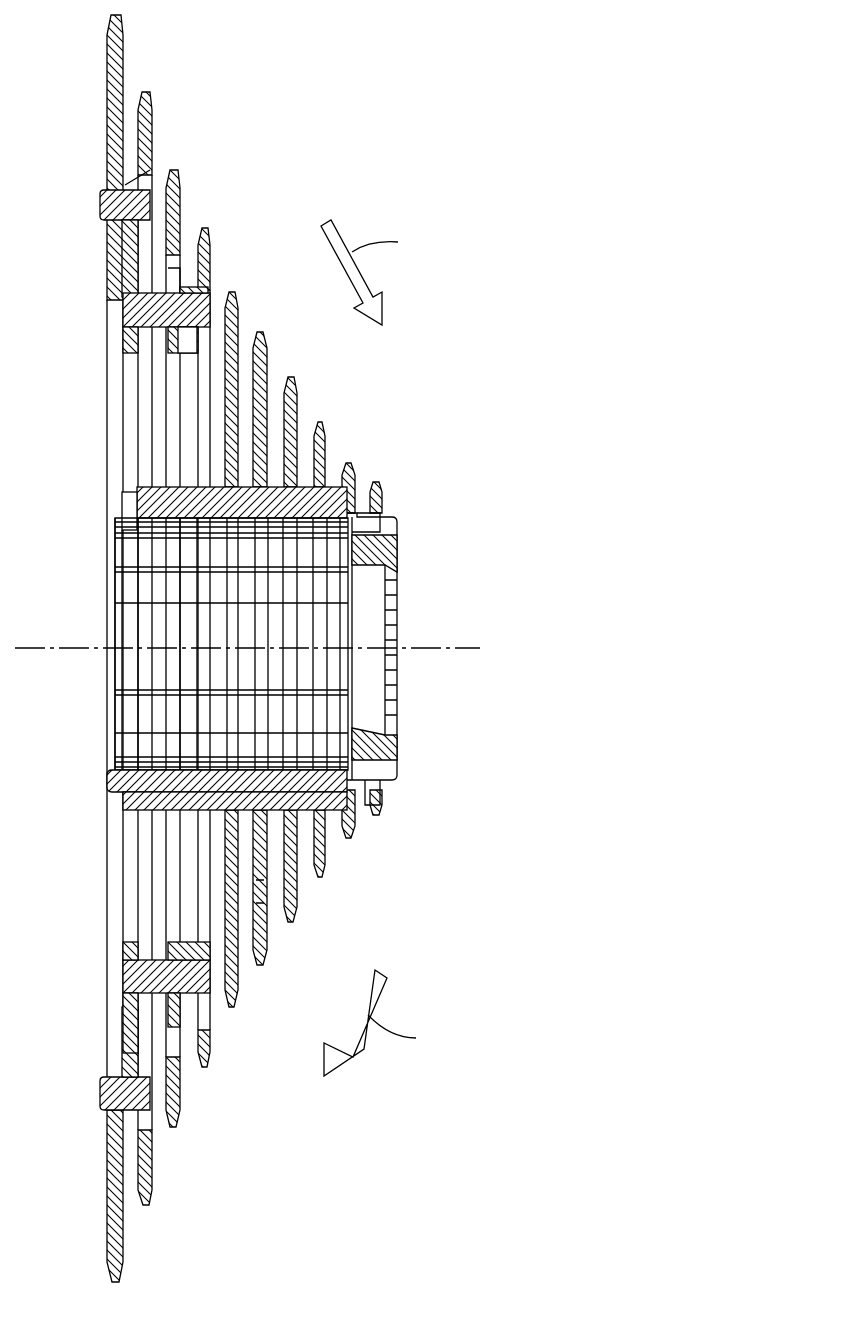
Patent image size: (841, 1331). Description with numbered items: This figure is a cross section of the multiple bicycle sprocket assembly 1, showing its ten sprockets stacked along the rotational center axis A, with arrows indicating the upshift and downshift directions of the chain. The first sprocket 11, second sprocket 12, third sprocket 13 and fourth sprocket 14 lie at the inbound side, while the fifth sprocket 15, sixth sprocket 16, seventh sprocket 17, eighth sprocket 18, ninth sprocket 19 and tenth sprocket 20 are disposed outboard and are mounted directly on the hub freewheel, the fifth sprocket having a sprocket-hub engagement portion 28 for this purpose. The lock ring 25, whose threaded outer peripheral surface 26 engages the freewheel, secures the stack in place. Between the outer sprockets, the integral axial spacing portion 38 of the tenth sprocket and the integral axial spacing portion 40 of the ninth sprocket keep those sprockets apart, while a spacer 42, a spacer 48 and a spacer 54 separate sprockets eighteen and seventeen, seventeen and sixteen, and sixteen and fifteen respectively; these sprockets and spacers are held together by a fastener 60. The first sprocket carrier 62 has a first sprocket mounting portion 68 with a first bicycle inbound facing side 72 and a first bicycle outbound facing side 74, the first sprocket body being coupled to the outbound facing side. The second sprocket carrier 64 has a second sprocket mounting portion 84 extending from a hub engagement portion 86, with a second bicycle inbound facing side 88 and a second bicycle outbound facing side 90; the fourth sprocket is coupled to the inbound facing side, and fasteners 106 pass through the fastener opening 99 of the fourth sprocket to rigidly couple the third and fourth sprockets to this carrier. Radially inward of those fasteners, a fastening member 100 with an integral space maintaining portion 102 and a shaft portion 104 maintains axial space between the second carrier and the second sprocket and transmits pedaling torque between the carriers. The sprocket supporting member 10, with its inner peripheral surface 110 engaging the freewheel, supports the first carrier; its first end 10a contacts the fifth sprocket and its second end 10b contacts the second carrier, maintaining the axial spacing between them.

The multiple bicycle sprocket assembly 1 is at (418, 384).
The sprocket supporting member 10 is at (150, 490).
The first end 10a is at (246, 472).
The second end 10b is at (128, 512).
The first sprocket 11 is at (215, 233).
The second sprocket 12 is at (184, 190).
The third sprocket 13 is at (155, 108).
The fourth sprocket 14 is at (102, 57).
The fifth sprocket 15 is at (242, 300).
The sixth sprocket 16 is at (270, 355).
The seventh sprocket 17 is at (300, 395).
The eighth sprocket 18 is at (328, 432).
The ninth sprocket 19 is at (360, 473).
The tenth sprocket 20 is at (386, 489).
The lock ring 25 is at (398, 555).
The outer peripheral surface 26 is at (386, 783).
The sprocket-hub engagement portion 28 is at (230, 762).
The integral axial spacing portion 38 is at (365, 800).
The integral axial spacing portion 40 is at (338, 815).
The spacer 42 is at (313, 838).
The spacer 48 is at (284, 905).
The spacer 54 is at (258, 975).
The fastener 60 is at (106, 790).
The first sprocket carrier 62 is at (176, 391).
The second sprocket carrier 64 is at (116, 259).
The first sprocket mounting portion 68 is at (190, 290).
The first bicycle inbound facing side 72 is at (170, 352).
The first bicycle outbound facing side 74 is at (182, 348).
The second sprocket mounting portion 84 is at (125, 152).
The hub engagement portion 86 is at (127, 525).
The second bicycle inbound facing side 88 is at (130, 185).
The second bicycle outbound facing side 90 is at (148, 190).
The fastener opening 99 is at (118, 240).
The fastening member 100 is at (118, 323).
The space maintaining portion 102 is at (150, 285).
The shaft portion 104 is at (208, 271).
The fastener 106 is at (97, 197).
The inner peripheral surface 110 is at (232, 1000).
The rotational center axis A is at (445, 655).